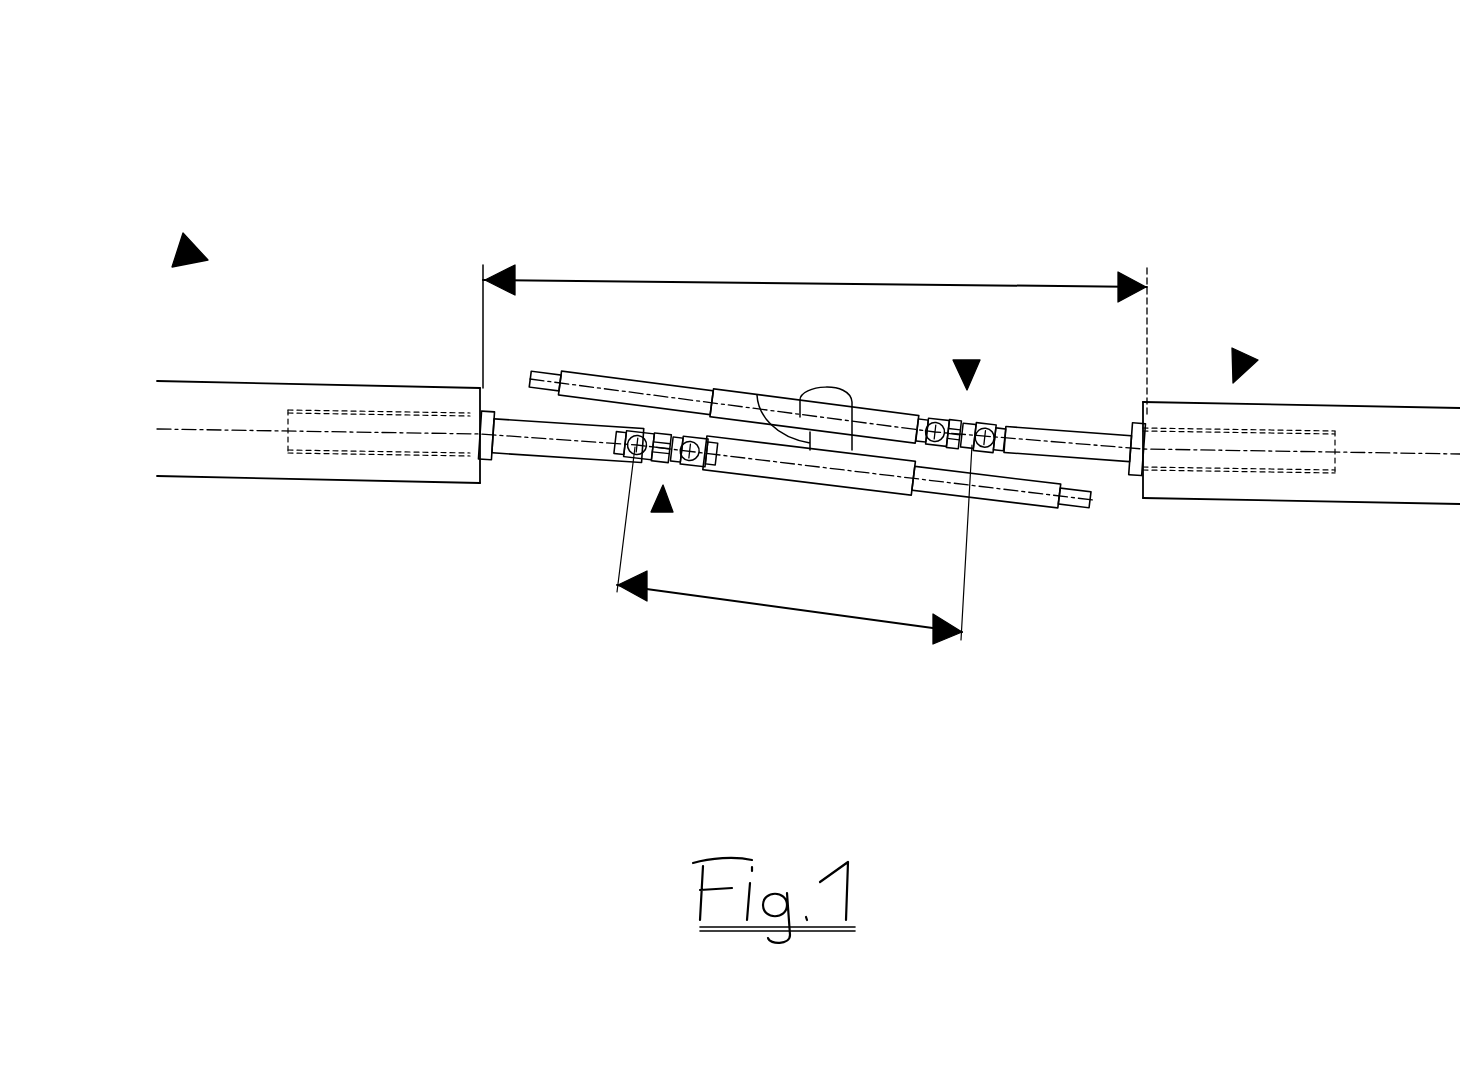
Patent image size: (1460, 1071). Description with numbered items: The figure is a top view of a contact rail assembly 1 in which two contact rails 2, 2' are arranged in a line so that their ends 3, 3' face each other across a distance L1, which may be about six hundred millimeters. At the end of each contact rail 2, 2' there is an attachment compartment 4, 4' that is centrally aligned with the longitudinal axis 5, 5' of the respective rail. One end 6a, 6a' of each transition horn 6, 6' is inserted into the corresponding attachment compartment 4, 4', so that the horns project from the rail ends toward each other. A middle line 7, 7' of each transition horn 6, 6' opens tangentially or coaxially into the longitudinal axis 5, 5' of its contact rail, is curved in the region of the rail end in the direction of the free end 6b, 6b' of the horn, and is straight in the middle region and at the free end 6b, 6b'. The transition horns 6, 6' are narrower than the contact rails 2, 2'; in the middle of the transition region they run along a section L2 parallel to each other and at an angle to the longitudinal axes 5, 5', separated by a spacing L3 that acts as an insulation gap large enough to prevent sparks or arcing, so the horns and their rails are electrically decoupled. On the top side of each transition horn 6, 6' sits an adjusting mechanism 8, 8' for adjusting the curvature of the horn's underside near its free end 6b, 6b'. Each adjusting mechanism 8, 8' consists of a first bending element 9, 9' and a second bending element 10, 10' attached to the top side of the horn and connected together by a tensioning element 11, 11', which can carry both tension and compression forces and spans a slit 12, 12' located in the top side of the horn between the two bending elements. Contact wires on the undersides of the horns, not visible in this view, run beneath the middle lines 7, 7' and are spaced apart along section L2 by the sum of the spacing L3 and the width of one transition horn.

The contact rail assembly 1 is at (182, 250).
The contact rail 2 is at (318, 275).
The contact rail 2' is at (1301, 294).
The end of contact rail 3 is at (804, 268).
The end of contact rail 3' is at (1158, 280).
The attachment compartment 4 is at (379, 261).
The attachment compartment 4' is at (1239, 279).
The longitudinal axis 5 is at (625, 283).
The longitudinal axis 5' is at (1113, 266).
The transition horn 6 is at (502, 622).
The transition horn 6' is at (1199, 621).
The end of transition horn 6a is at (297, 600).
The end of transition horn 6a' is at (1348, 624).
The free end of transition horn 6b is at (897, 612).
The free end of transition horn 6b' is at (878, 588).
The middle line 7 is at (434, 620).
The middle line 7' is at (1237, 629).
The adjusting mechanism 8 is at (684, 612).
The adjusting mechanism 8' is at (941, 265).
The first bending element 9 is at (588, 609).
The first bending element 9' is at (991, 269).
The second bending element 10 is at (755, 628).
The second bending element 10' is at (994, 269).
The tensioning element 11 is at (590, 265).
The tensioning element 11' is at (1098, 625).
The slit 12 is at (645, 265).
The slit 12' is at (1014, 604).
The distance L1 is at (815, 332).
The section L2 is at (794, 544).
The spacing L3 is at (760, 425).